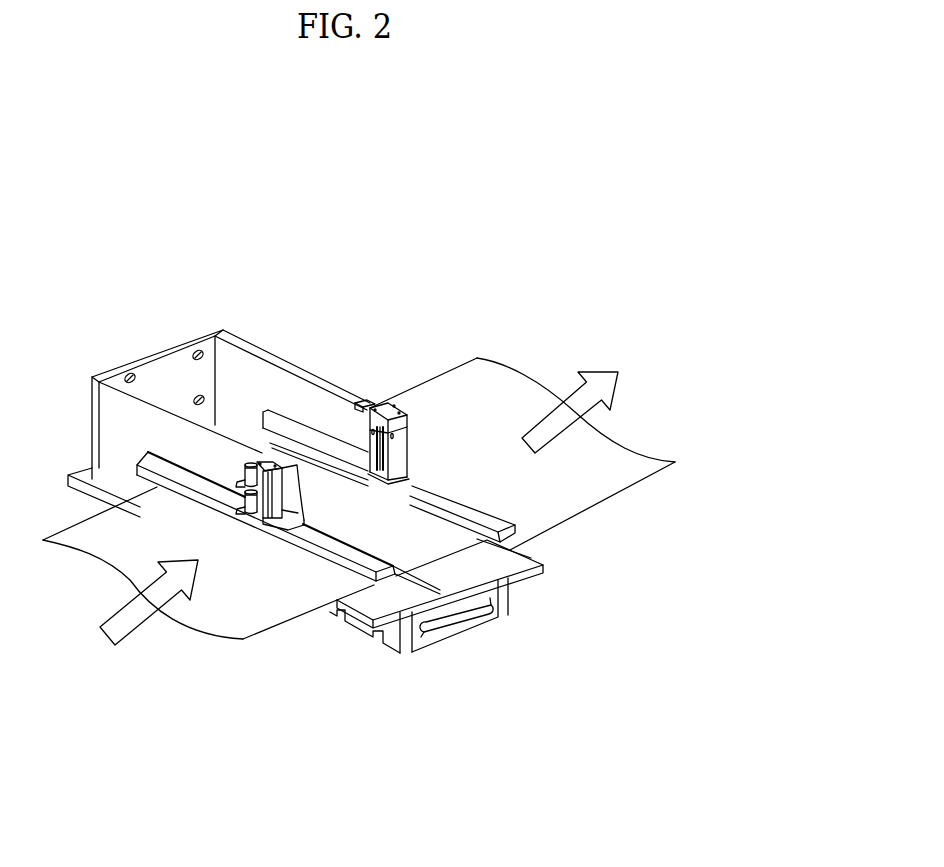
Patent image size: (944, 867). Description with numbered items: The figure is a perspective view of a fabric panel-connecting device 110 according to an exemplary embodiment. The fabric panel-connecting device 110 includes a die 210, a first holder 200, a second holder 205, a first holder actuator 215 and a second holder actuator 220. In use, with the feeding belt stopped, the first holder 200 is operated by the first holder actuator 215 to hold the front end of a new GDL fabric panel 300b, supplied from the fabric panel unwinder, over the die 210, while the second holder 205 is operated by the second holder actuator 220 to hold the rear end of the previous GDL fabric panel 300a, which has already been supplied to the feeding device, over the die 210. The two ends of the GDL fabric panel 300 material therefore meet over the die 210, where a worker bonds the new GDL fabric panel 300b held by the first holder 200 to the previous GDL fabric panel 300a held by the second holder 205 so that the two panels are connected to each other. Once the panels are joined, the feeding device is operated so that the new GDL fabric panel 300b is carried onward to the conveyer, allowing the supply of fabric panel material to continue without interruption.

The fabric panel-connecting device 110 is at (389, 672).
The first holder 200 is at (310, 540).
The second holder 205 is at (452, 503).
The die 210 is at (363, 623).
The first holder actuator 215 is at (263, 450).
The second holder actuator 220 is at (387, 392).
The GDL fabric panel 300 is at (483, 608).
The previous GDL fabric panel 300a is at (535, 507).
The new GDL fabric panel 300b is at (421, 639).